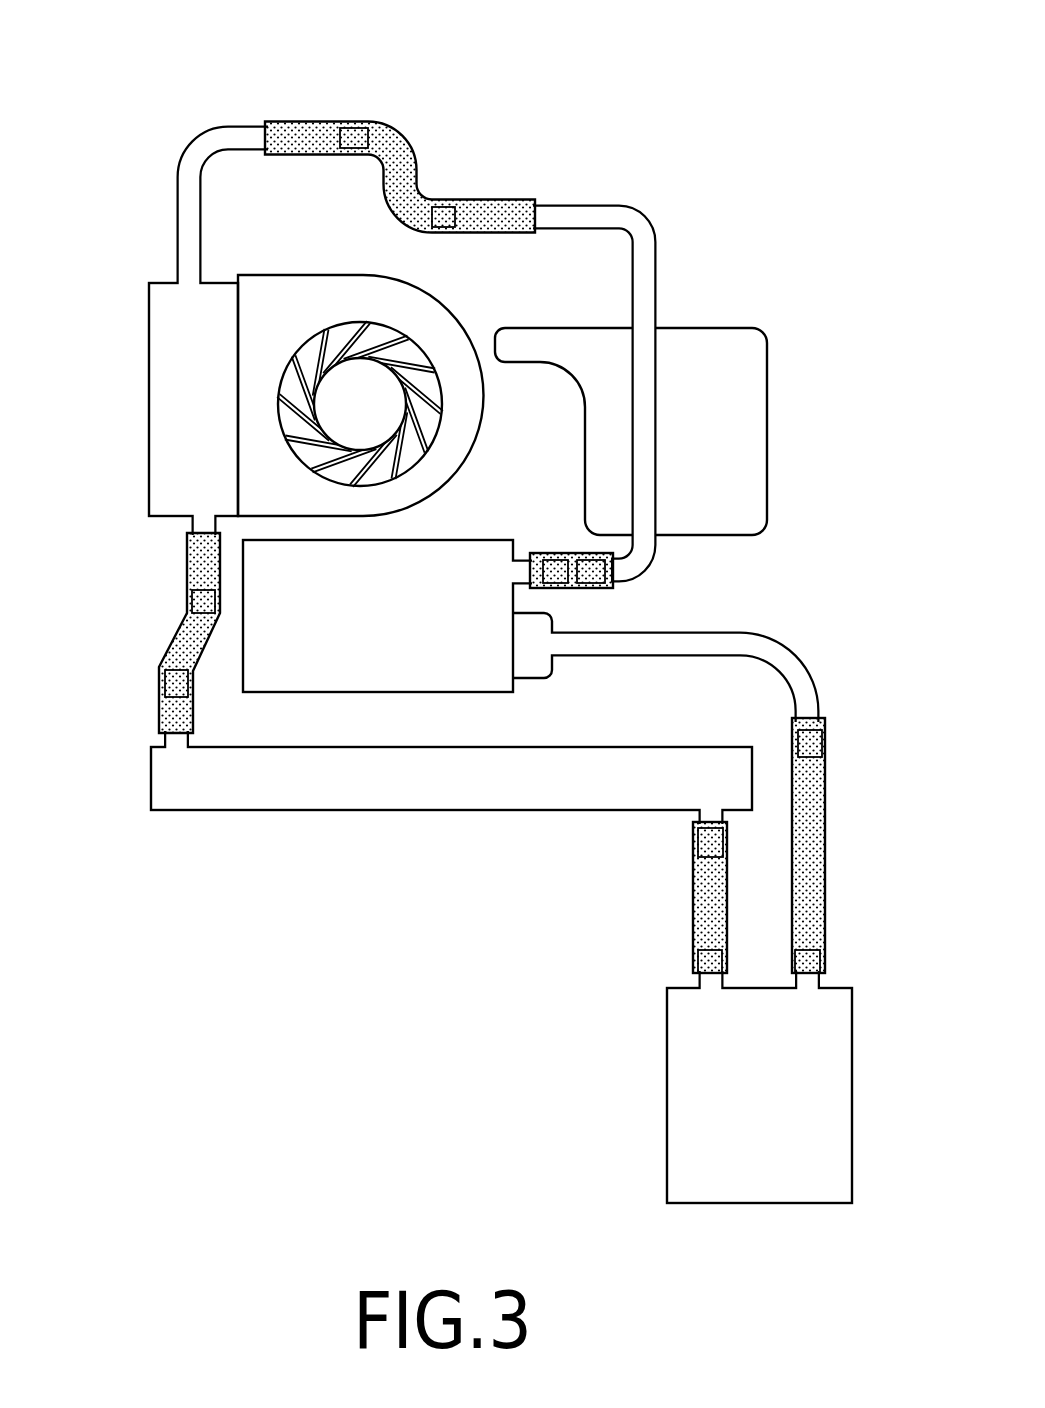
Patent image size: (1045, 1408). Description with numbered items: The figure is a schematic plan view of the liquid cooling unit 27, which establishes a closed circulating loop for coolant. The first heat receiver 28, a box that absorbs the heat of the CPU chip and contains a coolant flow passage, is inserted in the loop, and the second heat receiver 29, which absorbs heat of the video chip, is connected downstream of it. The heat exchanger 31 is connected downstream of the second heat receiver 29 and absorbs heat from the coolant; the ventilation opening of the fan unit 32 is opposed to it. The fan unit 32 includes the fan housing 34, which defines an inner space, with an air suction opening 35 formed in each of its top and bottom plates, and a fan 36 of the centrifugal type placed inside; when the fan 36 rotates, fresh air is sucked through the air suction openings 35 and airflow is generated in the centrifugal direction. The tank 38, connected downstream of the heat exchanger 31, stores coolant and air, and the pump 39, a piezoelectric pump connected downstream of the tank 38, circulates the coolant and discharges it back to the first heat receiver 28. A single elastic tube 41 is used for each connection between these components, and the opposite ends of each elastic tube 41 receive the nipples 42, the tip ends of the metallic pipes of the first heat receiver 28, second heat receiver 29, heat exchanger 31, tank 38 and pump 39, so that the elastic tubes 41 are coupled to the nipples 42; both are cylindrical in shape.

The liquid cooling unit 27 is at (275, 108).
The first heat receiver 28 is at (320, 692).
The second heat receiver 29 is at (767, 418).
The heat exchanger 31 is at (155, 315).
The fan unit 32 is at (372, 348).
The fan housing 34 is at (370, 265).
The air suction opening 35 is at (306, 354).
The fan 36 is at (382, 378).
The tank 38 is at (188, 811).
The pump 39 is at (667, 1163).
The elastic tube 41 is at (417, 153).
The nipple 42 is at (178, 219).